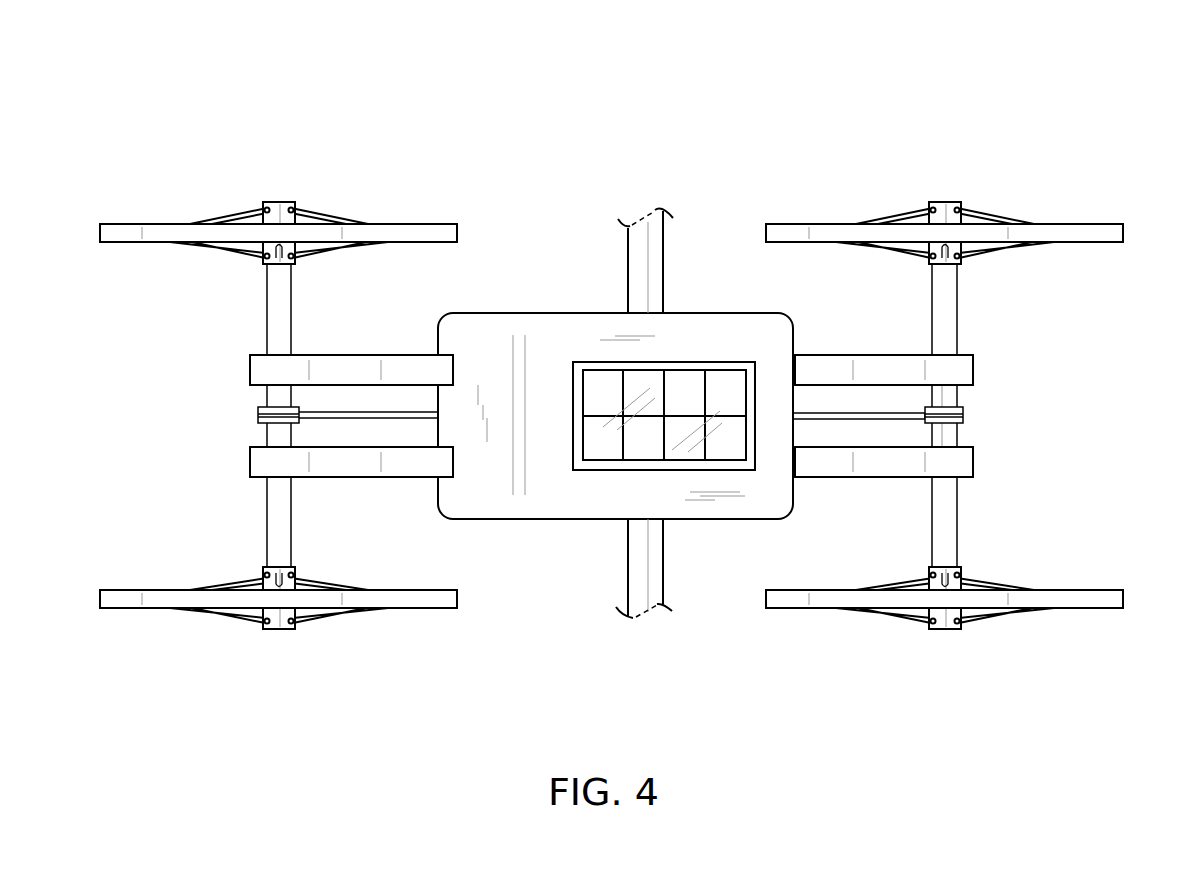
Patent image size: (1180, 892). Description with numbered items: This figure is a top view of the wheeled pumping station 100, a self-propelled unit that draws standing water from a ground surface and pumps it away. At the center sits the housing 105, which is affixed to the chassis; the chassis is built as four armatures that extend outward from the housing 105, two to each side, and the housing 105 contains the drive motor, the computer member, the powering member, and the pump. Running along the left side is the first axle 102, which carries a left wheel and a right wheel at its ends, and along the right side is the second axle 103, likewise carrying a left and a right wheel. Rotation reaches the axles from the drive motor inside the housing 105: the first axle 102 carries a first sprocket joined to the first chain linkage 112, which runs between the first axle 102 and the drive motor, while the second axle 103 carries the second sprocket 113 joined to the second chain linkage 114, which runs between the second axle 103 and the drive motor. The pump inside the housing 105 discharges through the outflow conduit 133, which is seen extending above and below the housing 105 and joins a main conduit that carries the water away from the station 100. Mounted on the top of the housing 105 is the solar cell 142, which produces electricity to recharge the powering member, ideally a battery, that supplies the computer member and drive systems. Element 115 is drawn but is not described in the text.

The wheeled pumping station 100 is at (1066, 82).
The first axle 102 is at (267, 322).
The second axle 103 is at (951, 292).
The housing 105 is at (500, 316).
The first chain linkage 112 is at (262, 411).
The second sprocket 113 is at (358, 418).
The second chain linkage 114 is at (963, 421).
The right connecting rod 115 is at (872, 412).
The outflow conduit 133 is at (655, 568).
The solar cell 142 is at (603, 383).